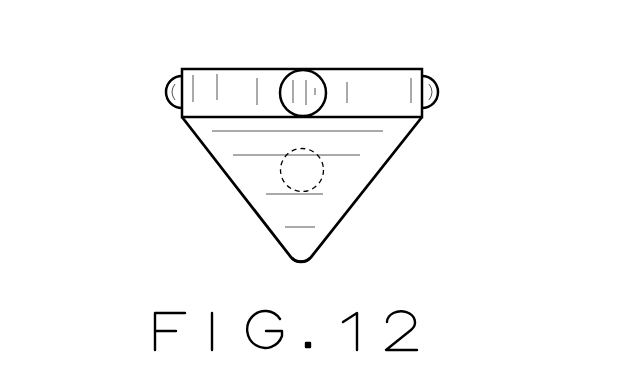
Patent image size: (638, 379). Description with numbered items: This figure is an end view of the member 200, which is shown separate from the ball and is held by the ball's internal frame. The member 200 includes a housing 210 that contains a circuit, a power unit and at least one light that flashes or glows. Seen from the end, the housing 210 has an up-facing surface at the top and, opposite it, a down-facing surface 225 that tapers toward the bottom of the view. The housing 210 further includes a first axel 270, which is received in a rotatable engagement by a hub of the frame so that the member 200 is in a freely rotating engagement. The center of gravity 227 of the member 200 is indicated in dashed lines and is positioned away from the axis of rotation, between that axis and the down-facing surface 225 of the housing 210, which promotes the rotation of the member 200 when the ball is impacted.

The member 200 is at (158, 141).
The housing 210 is at (383, 148).
The down-facing surface 225 is at (303, 262).
The center of gravity 227 is at (278, 173).
The first axel 270 is at (307, 82).